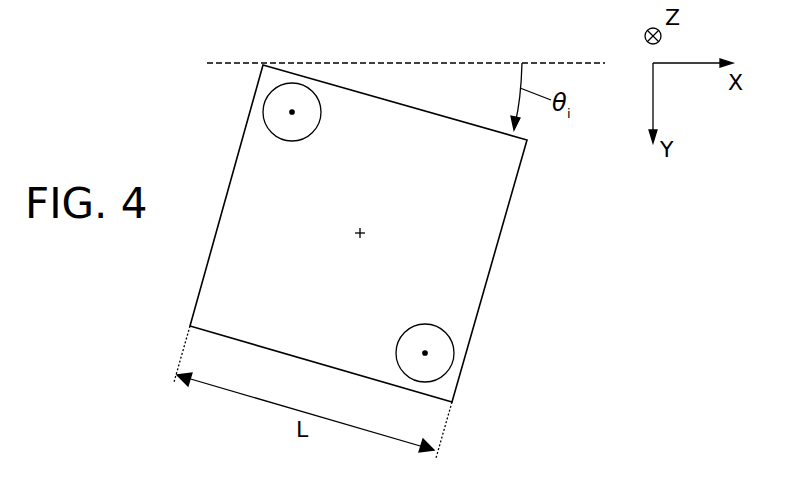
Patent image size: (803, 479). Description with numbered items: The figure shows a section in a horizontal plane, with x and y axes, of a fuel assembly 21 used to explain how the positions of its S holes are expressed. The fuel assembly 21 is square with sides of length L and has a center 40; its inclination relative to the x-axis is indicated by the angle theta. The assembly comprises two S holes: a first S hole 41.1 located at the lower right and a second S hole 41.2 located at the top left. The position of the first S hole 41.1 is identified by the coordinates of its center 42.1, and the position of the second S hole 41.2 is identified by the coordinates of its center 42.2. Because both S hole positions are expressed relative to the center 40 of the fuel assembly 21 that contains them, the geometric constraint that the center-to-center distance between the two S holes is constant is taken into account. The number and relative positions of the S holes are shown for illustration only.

The fuel assembly 21 is at (202, 277).
The center 40 is at (362, 233).
The first S hole 41.1 is at (451, 370).
The second S hole 41.2 is at (262, 118).
The center of first S hole 42.1 is at (426, 353).
The center of second S hole 42.2 is at (291, 111).